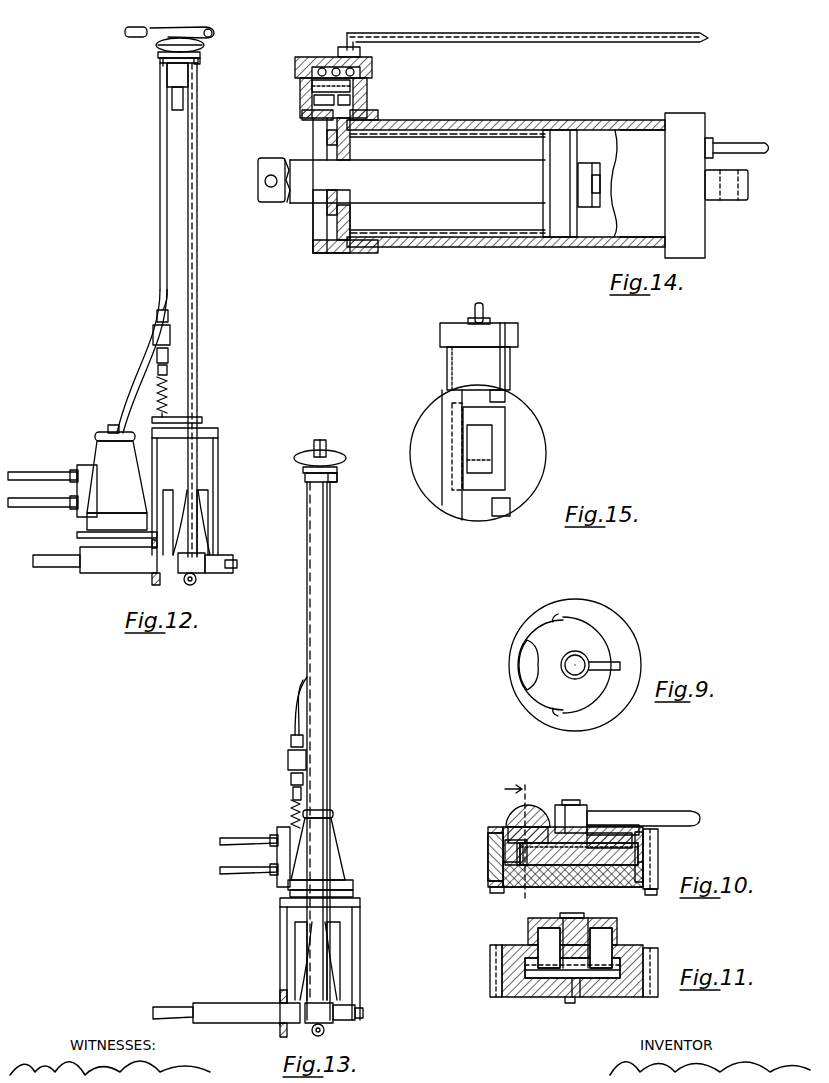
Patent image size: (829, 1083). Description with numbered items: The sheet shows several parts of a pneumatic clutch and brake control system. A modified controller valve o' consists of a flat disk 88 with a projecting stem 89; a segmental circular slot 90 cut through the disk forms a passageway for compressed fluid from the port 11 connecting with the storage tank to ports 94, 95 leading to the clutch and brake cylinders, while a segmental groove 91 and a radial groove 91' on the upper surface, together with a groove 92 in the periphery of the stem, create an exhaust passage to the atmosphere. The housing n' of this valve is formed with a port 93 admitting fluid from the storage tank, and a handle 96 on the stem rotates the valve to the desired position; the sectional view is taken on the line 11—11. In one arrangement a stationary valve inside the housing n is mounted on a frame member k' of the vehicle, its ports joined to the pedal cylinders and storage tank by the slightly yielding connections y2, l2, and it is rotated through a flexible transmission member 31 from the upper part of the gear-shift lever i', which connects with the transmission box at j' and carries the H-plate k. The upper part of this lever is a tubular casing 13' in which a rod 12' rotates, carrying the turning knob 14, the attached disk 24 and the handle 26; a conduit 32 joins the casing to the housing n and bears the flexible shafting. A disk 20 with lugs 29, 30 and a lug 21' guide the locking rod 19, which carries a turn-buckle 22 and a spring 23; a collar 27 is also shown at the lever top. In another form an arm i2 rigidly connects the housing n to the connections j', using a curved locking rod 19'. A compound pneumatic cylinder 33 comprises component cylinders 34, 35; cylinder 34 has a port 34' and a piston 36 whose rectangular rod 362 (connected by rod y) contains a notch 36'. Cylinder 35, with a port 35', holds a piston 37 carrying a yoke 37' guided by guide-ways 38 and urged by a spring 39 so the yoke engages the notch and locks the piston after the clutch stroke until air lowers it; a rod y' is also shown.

In FIG. 12, the handle 26 is at (185, 29).
In FIG. 13, the handle 26 is at (322, 440).
In FIG. 12, the turning knob 14 is at (157, 46).
In FIG. 13, the turning knob 14 is at (340, 455).
In FIG. 12, the disk 24 is at (158, 55).
In FIG. 13, the disk 24 is at (337, 470).
In FIG. 12, the disk 20 is at (160, 61).
In FIG. 13, the disk 20 is at (305, 478).
In FIG. 12, the lug 29 is at (163, 64).
In FIG. 12, the lug 30 is at (200, 61).
In FIG. 12, the tubular casing 13' is at (204, 75).
In FIG. 12, the rod 12' is at (152, 101).
In FIG. 12, the locking rod 19 is at (138, 176).
In FIG. 13, the locking rod 19' is at (277, 706).
In FIG. 12, the conduit 32 is at (160, 303).
In FIG. 12, the turn-buckle 22 is at (153, 333).
In FIG. 13, the turn-buckle 22 is at (288, 758).
In FIG. 12, the flexible transmission member 31 is at (120, 369).
In FIG. 12, the gear-shift lever i' is at (206, 310).
In FIG. 13, the arm i2 is at (320, 553).
In FIG. 12, the spring 23 is at (169, 397).
In FIG. 13, the spring 23 is at (290, 807).
In FIG. 12, the lug 21' is at (223, 406).
In FIG. 12, the H-plate k is at (204, 489).
In FIG. 13, the H-plate k is at (337, 961).
In FIG. 12, the frame member k' is at (87, 571).
In FIG. 12, the transmission box connections j' is at (181, 574).
In FIG. 13, the transmission box connections j' is at (258, 1016).
In FIG. 12, the connection l2 is at (28, 470).
In FIG. 13, the connection l2 is at (240, 866).
In FIG. 12, the connection y2 is at (28, 497).
In FIG. 13, the connection y2 is at (240, 836).
In FIG. 12, the valve housing n is at (117, 481).
In FIG. 13, the valve housing n is at (315, 853).
In FIG. 13, the collar ring 27 is at (337, 482).
In FIG. 14, the rod y' is at (527, 49).
In FIG. 15, the rod y' is at (496, 309).
In FIG. 14, the rod y is at (739, 151).
In FIG. 14, the port 35' is at (356, 62).
In FIG. 14, the cylinder 35 is at (350, 98).
In FIG. 15, the cylinder 35 is at (500, 356).
In FIG. 14, the piston 37 is at (309, 91).
In FIG. 14, the spring 39 is at (306, 108).
In FIG. 14, the compound pneumatic cylinder 33 is at (506, 168).
In FIG. 14, the piston rod 362 is at (401, 180).
In FIG. 15, the piston rod 362 is at (477, 440).
In FIG. 14, the piston 36 is at (550, 183).
In FIG. 14, the notch 36' is at (306, 185).
In FIG. 14, the yoke 37' is at (306, 221).
In FIG. 15, the yoke 37' is at (522, 447).
In FIG. 14, the guide-ways 38 is at (320, 250).
In FIG. 15, the guide-ways 38 is at (450, 393).
In FIG. 14, the cylinder 34 is at (658, 185).
In FIG. 15, the cylinder 34 is at (496, 453).
In FIG. 14, the port 34' is at (724, 125).
In FIG. 9, the flat disk 88 is at (578, 627).
In FIG. 10, the flat disk 88 is at (640, 857).
In FIG. 11, the flat disk 88 is at (518, 963).
In FIG. 9, the projecting stem 89 is at (588, 656).
In FIG. 10, the projecting stem 89 is at (575, 805).
In FIG. 11, the projecting stem 89 is at (570, 914).
In FIG. 9, the segmental circular slot 90 is at (522, 662).
In FIG. 10, the segmental circular slot 90 is at (505, 854).
In FIG. 11, the segmental circular slot 90 is at (522, 974).
In FIG. 9, the segmental groove 91 is at (586, 677).
In FIG. 10, the segmental groove 91 is at (690, 853).
In FIG. 11, the segmental groove 91 is at (672, 969).
In FIG. 9, the radial groove 91' is at (652, 658).
In FIG. 10, the radial groove 91' is at (628, 807).
In FIG. 9, the groove 92 is at (540, 701).
In FIG. 10, the groove 92 is at (600, 835).
In FIG. 10, the port 93 is at (490, 873).
In FIG. 11, the port 93 is at (568, 1000).
In FIG. 11, the port 94 is at (610, 937).
In FIG. 10, the port 95 is at (538, 812).
In FIG. 11, the port 95 is at (535, 935).
In FIG. 10, the handle 96 is at (660, 812).
In FIG. 9, the controller valve o' is at (569, 665).
In FIG. 10, the housing n' is at (573, 865).
In FIG. 11, the housing n' is at (590, 967).
In FIG. 10, the port 11 is at (521, 841).